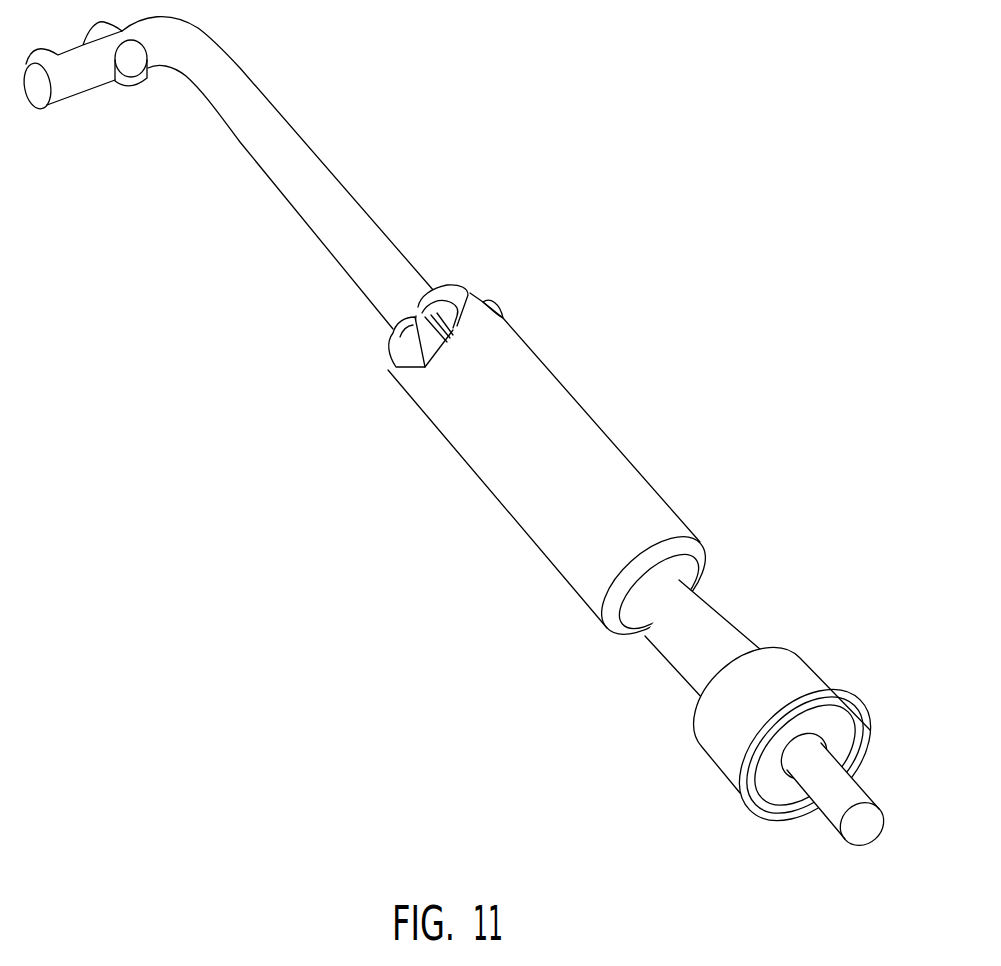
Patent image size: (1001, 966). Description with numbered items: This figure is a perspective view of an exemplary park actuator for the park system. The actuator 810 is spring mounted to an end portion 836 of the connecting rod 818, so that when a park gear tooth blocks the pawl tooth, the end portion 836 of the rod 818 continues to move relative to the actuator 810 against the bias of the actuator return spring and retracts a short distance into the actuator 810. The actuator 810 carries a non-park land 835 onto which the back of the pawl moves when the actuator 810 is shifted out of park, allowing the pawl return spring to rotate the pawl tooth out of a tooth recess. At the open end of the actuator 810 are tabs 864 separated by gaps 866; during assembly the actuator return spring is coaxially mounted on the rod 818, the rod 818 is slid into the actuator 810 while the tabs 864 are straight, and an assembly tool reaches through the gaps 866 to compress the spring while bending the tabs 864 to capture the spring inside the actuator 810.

The connecting rod 818 is at (297, 132).
The actuator 810 is at (600, 423).
The tabs 864 is at (455, 300).
The gaps 866 is at (390, 338).
The non-park land 835 is at (733, 612).
The end portion 836 is at (826, 818).